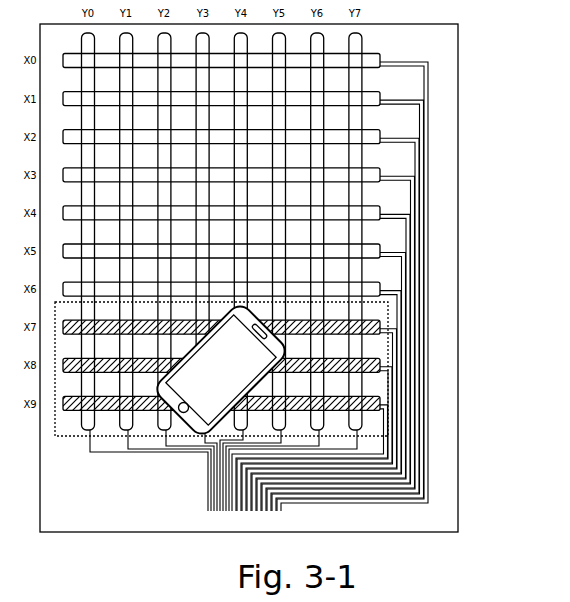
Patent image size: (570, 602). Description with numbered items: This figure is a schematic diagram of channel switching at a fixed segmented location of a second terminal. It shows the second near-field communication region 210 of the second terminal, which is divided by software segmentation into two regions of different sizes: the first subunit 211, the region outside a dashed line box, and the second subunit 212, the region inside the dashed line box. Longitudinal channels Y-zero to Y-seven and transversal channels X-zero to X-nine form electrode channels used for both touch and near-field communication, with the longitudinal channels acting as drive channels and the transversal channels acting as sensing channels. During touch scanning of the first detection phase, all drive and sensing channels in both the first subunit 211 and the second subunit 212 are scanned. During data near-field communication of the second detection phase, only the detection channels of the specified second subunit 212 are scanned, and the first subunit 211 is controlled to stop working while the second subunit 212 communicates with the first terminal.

The second near-field communication region 210 is at (458, 100).
The first subunit 211 is at (337, 232).
The second subunit 212 is at (373, 343).